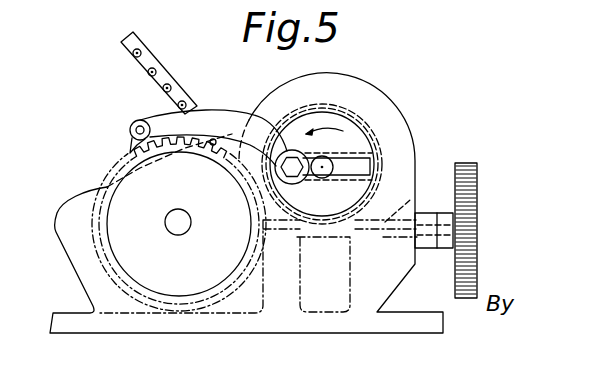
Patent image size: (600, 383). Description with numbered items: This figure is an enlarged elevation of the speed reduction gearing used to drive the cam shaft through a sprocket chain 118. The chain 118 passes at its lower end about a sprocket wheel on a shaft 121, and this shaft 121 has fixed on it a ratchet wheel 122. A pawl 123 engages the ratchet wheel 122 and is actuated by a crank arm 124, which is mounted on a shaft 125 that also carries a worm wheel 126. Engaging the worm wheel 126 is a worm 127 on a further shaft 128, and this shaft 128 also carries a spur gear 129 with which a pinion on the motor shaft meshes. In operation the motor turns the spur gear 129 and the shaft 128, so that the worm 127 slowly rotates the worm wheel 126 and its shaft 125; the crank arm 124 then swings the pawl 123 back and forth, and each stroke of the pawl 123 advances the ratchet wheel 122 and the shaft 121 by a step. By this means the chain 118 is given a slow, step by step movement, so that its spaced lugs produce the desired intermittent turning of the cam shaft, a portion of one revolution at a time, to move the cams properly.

The sprocket chain 118 is at (186, 92).
The shaft 121 is at (176, 236).
The ratchet wheel 122 is at (118, 157).
The pawl 123 is at (134, 122).
The crank arm 124 is at (292, 158).
The shaft 125 is at (332, 158).
The worm wheel 126 is at (383, 162).
The worm 127 is at (350, 242).
The shaft 128 is at (417, 194).
The spur gear 129 is at (478, 183).